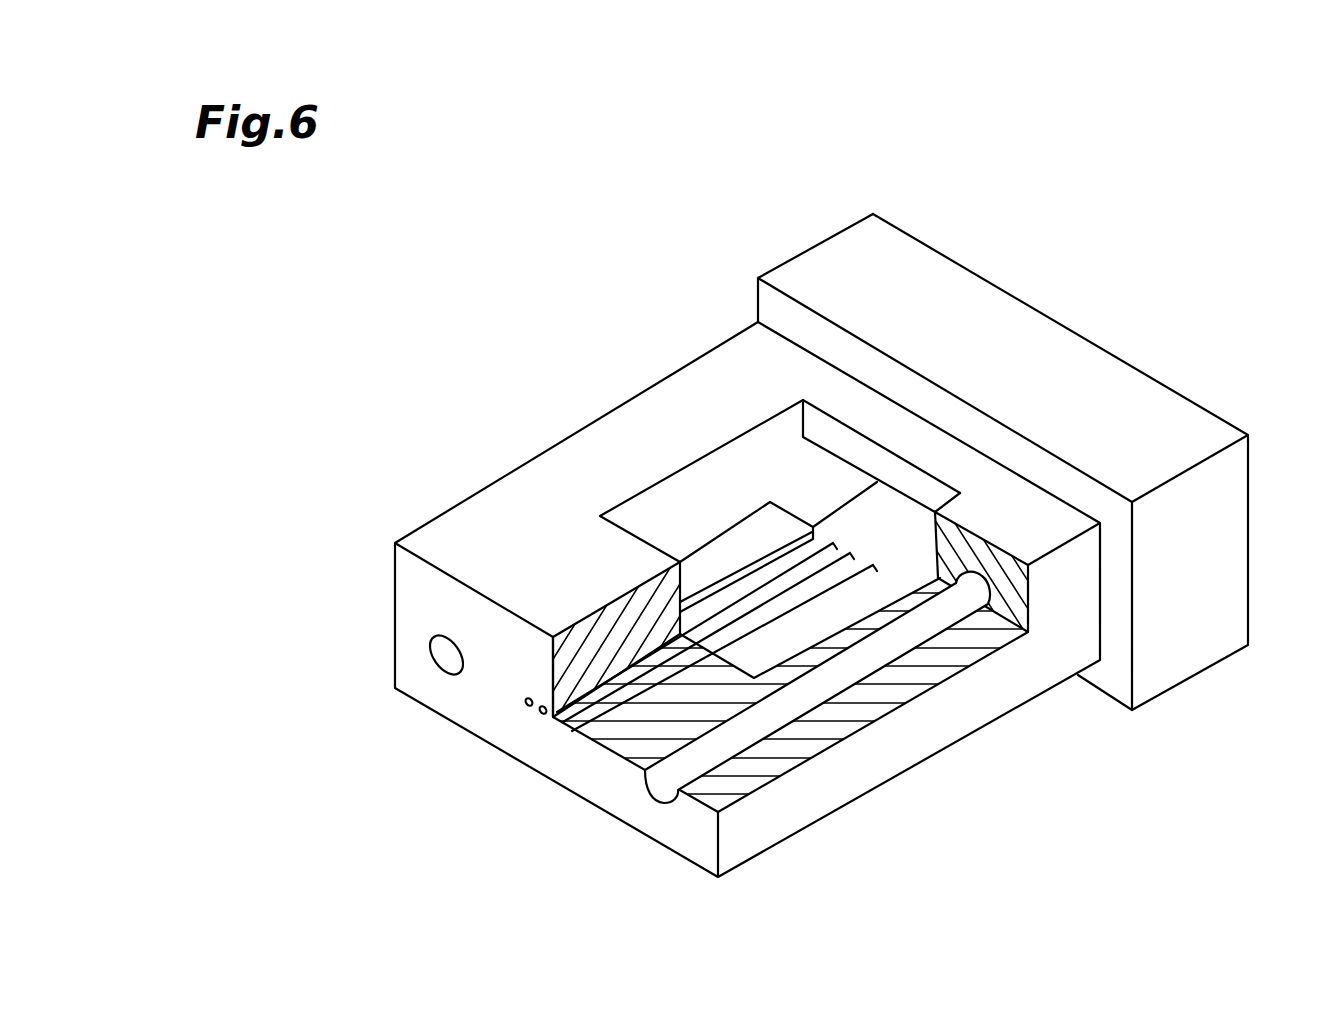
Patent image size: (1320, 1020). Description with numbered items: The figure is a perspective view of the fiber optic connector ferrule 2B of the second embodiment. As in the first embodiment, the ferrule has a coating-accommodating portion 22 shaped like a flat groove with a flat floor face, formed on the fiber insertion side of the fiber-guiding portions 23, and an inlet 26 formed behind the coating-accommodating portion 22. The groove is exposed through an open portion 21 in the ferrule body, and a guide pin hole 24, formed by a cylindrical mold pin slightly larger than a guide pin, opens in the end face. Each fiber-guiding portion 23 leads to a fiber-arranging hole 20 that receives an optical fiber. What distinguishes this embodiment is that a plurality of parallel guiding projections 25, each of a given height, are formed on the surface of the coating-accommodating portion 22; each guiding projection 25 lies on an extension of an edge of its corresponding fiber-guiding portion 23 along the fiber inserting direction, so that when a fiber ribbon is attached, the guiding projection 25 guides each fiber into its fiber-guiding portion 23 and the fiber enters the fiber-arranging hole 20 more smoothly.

The fiber optic connector ferrule 2B is at (1037, 244).
The fiber-arranging hole 20 is at (625, 690).
The open portion 21 is at (698, 484).
The coating-accommodating portion 22 is at (771, 610).
The fiber-guiding portion 23 is at (683, 662).
The guide pin hole 24 is at (443, 672).
The guiding projection 25 is at (833, 577).
The inlet 26 is at (896, 508).